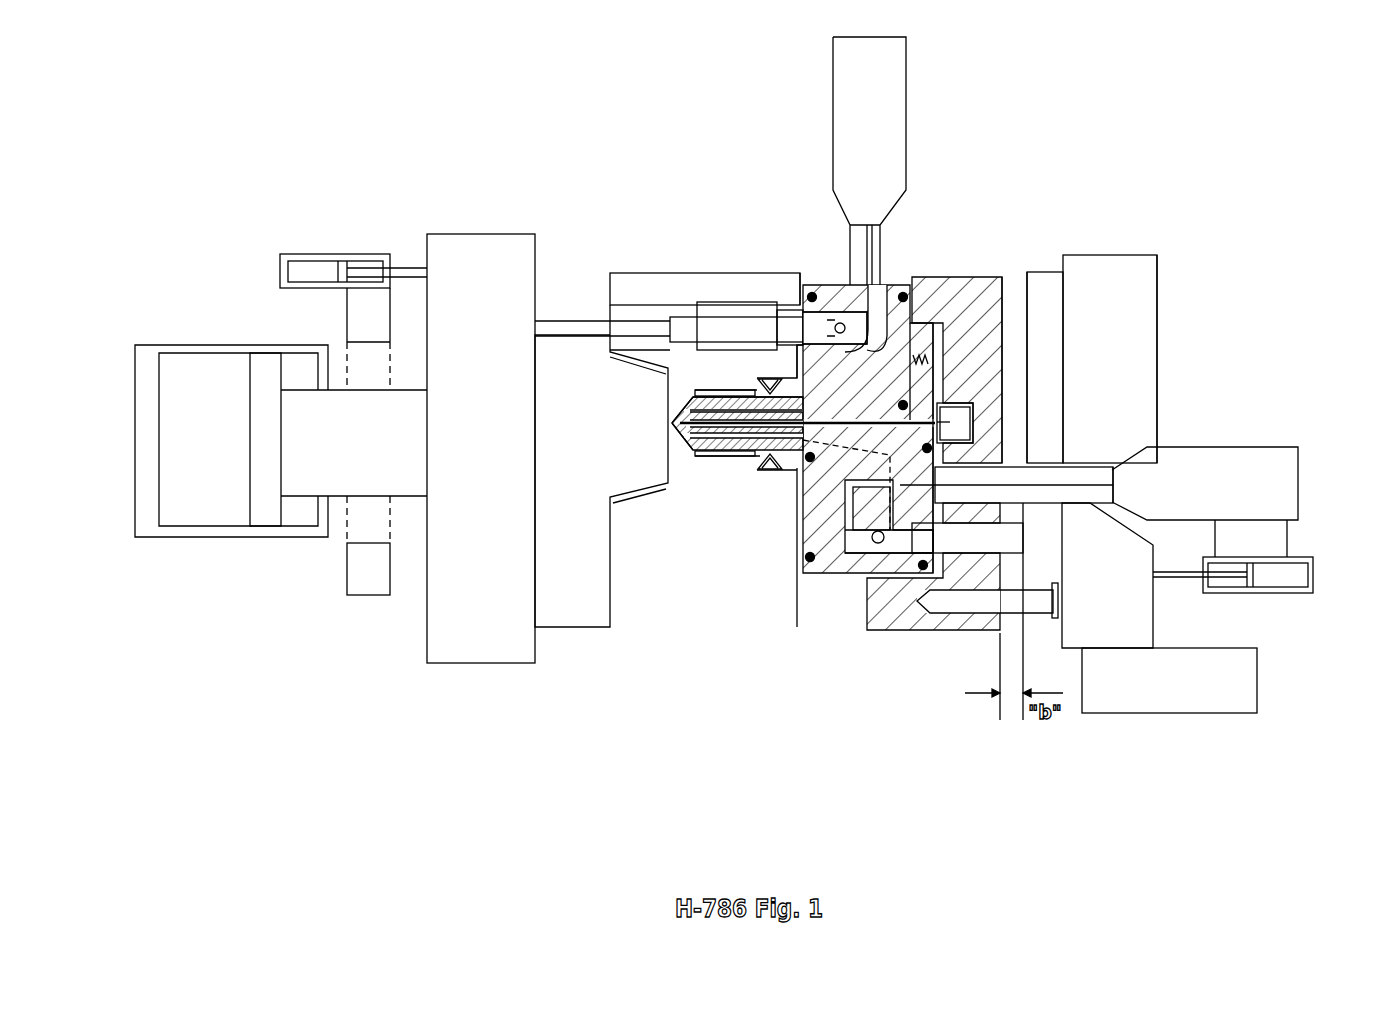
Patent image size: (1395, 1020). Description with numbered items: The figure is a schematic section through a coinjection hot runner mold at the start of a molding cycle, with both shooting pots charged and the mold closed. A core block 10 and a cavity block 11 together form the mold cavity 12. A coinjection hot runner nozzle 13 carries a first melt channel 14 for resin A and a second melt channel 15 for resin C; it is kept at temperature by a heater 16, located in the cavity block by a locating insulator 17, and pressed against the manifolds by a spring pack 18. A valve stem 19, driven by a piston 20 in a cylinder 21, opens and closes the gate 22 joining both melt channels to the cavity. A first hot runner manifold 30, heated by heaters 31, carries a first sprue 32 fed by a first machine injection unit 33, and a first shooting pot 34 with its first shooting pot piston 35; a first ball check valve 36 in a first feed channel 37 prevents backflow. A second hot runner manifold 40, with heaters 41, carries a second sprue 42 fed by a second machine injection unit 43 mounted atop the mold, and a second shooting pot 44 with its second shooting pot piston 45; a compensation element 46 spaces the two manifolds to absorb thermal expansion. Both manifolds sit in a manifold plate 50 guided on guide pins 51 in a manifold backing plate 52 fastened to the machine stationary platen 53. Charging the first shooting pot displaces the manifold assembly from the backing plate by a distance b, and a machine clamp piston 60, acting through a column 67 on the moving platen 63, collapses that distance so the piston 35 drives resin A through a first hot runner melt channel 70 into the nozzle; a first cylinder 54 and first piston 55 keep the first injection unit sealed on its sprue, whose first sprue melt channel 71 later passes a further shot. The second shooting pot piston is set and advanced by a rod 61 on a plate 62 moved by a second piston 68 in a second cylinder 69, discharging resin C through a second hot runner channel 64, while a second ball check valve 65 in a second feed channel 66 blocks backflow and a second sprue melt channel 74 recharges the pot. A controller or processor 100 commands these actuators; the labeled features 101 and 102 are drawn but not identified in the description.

The core block 10 is at (540, 290).
The cavity block 11 is at (590, 300).
The mold cavity 12 is at (618, 303).
The coinjection hot runner nozzle 13 is at (690, 440).
The first melt channel 14 is at (722, 452).
The second melt channel 15 is at (752, 397).
The heater 16 is at (745, 456).
The locating insulator 17 is at (778, 470).
The spring pack 18 is at (766, 463).
The valve stem 19 is at (735, 385).
The piston 20 is at (965, 427).
The cylinder 21 is at (1005, 462).
The gate 22 is at (672, 428).
The first hot runner manifold 30 is at (1090, 467).
The heaters 31 is at (800, 480).
The first sprue 32 is at (1093, 505).
The first machine injection unit 33 is at (1265, 457).
The first shooting pot 34 is at (900, 548).
The first shooting pot piston 35 is at (926, 560).
The first ball check valve 36 is at (878, 550).
The first feed channel 37 is at (857, 540).
The second hot runner manifold 40 is at (960, 335).
The heaters 41 is at (925, 330).
The second sprue 42 is at (887, 250).
The second machine injection unit 43 is at (897, 78).
The second shooting pot 44 is at (800, 322).
The second shooting pot piston 45 is at (643, 355).
The compensation element 46 is at (1043, 372).
The manifold plate 50 is at (1045, 330).
The guide pins 51 is at (1080, 495).
The manifold backing plate 52 is at (1138, 320).
The machine stationary platen 53 is at (1150, 300).
The first cylinder 54 is at (1295, 588).
The first piston 55 is at (1250, 583).
The machine clamp piston 60 is at (266, 512).
The rod 61 is at (506, 324).
The plate 62 is at (374, 295).
The moving platen 63 is at (442, 254).
The second hot runner channel 64 is at (903, 290).
The second ball check valve 65 is at (822, 290).
The second feed channel 66 is at (850, 283).
The column 67 is at (352, 489).
The second piston 68 is at (338, 274).
The second cylinder 69 is at (280, 249).
The first hot runner melt channel 70 is at (893, 500).
The first sprue melt channel 71 is at (1087, 497).
The second sprue melt channel 74 is at (867, 237).
The controller or processor 100 is at (1208, 693).
The channel 101 is at (836, 290).
The passage 102 is at (853, 533).